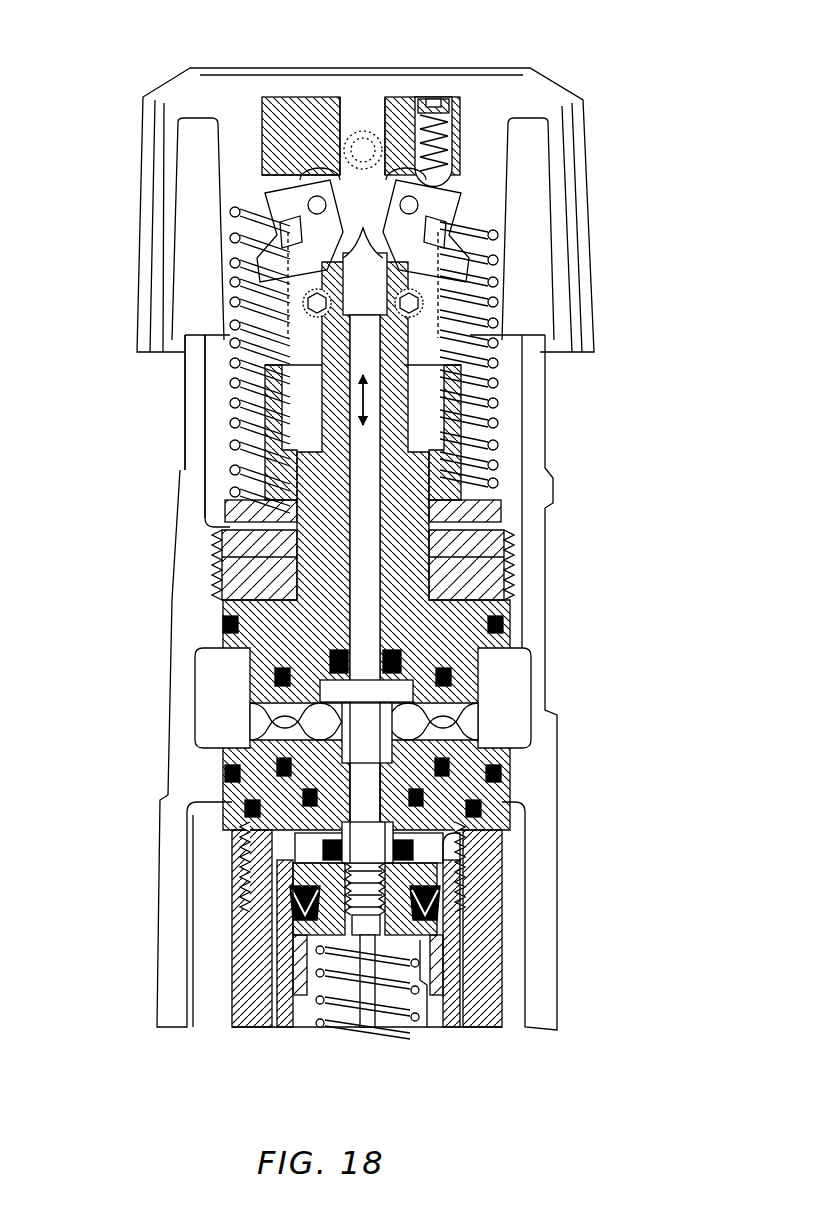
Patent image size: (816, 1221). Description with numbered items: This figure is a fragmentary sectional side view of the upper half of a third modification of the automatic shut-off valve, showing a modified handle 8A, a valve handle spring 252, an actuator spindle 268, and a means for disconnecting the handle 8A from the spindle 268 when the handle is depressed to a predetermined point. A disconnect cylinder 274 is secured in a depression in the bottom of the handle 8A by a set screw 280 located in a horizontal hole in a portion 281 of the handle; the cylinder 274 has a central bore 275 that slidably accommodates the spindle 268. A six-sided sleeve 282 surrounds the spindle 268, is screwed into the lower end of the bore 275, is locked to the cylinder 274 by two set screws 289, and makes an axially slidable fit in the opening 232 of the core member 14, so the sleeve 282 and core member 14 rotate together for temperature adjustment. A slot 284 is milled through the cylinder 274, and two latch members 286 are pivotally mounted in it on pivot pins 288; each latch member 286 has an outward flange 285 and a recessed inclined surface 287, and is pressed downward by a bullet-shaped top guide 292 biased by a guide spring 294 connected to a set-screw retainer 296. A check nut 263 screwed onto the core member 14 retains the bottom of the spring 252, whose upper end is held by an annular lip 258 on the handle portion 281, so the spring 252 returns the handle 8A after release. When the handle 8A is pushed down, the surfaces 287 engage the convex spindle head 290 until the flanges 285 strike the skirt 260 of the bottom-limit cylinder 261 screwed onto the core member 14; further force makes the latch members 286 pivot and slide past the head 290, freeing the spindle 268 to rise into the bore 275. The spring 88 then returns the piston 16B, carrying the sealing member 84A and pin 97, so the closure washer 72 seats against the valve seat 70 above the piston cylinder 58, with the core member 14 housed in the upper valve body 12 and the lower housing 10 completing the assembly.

The handle 8A is at (566, 90).
The lower housing 10 is at (510, 970).
The upper valve body 12 is at (485, 662).
The core member 14 is at (447, 532).
The piston 16B is at (421, 980).
The piston cylinder 58 is at (285, 1030).
The valve seat 70 is at (297, 812).
The closure washer 72 is at (440, 848).
The sealing member 84A is at (303, 910).
The spring 88 is at (347, 1030).
The pin 97 is at (367, 1030).
The section 232 is at (332, 571).
The valve handle spring 252 is at (490, 460).
The annular lip 258 is at (232, 228).
The skirt 260 is at (455, 405).
The bottom-limit cylinder 261 is at (265, 462).
The check nut 263 is at (505, 508).
The actuator spindle 268 is at (410, 587).
The disconnect cylinder 274 is at (295, 107).
The bore 275 is at (343, 108).
The set screw 280 is at (365, 128).
The portion 281 is at (230, 178).
The sleeve 282 is at (330, 410).
The slot 284 is at (261, 175).
The flange 285 is at (275, 273).
The latch member 286 is at (270, 222).
The recessed inclined surface 287 is at (365, 215).
The pivot pin 288 is at (305, 204).
The set screw 289 is at (290, 307).
The spindle head 290 is at (379, 300).
The top guide 292 is at (398, 180).
The guide spring 294 is at (455, 142).
The set-screw retainer 296 is at (420, 100).